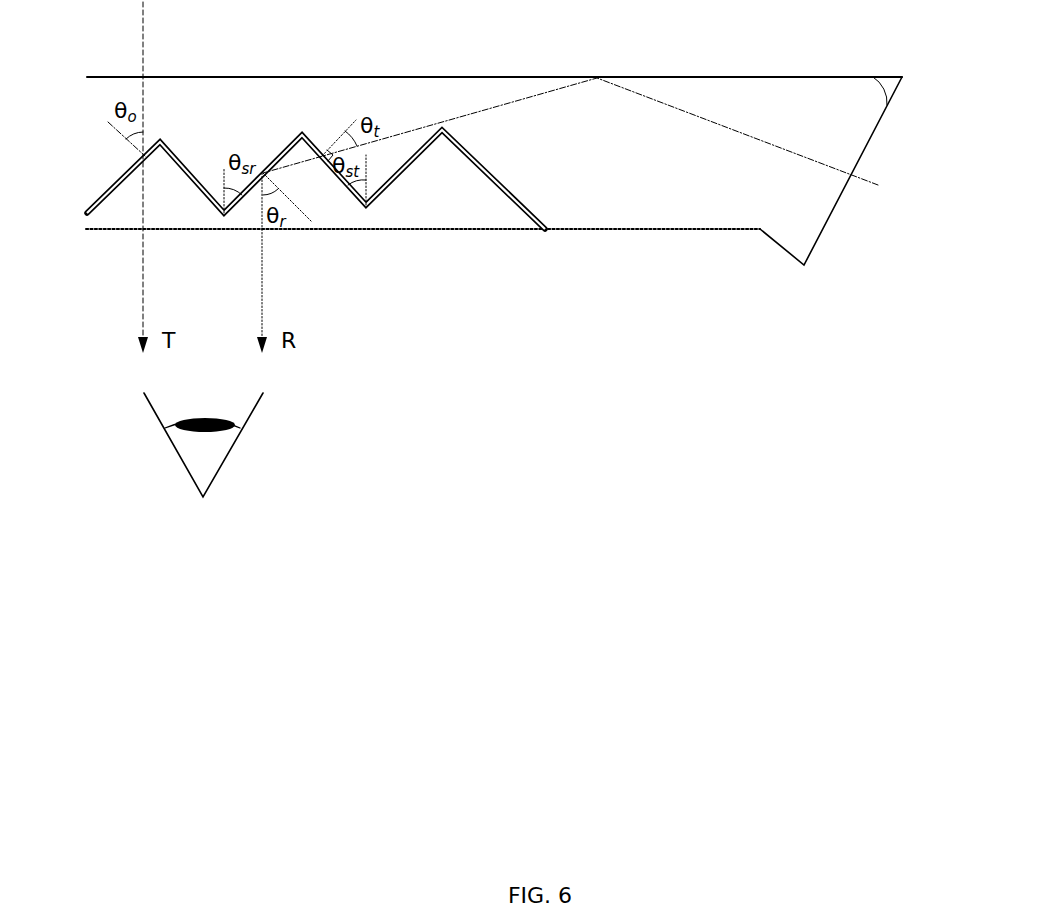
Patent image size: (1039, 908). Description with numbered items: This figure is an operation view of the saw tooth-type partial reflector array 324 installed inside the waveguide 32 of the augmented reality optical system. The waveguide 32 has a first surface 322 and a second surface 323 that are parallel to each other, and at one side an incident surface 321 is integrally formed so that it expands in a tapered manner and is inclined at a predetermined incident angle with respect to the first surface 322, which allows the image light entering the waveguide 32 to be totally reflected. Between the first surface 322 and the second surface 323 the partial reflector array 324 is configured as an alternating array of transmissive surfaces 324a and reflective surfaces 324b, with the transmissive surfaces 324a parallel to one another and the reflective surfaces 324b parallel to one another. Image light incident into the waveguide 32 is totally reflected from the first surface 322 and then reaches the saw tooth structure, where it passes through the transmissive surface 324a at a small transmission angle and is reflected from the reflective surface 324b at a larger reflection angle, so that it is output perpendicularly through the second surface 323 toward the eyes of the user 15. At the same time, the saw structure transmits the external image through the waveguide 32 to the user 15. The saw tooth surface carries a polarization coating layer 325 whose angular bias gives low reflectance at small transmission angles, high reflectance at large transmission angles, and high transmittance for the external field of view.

The waveguide 32 is at (492, 168).
The incident surface 321 is at (822, 228).
The first surface 322 is at (640, 78).
The second surface 323 is at (100, 231).
The saw tooth-type partial reflector array 324 is at (301, 159).
The transmissive surface 324a is at (178, 158).
The reflective surface 324b is at (122, 179).
The polarization coating layer 325 is at (500, 186).
The user 15 is at (228, 453).